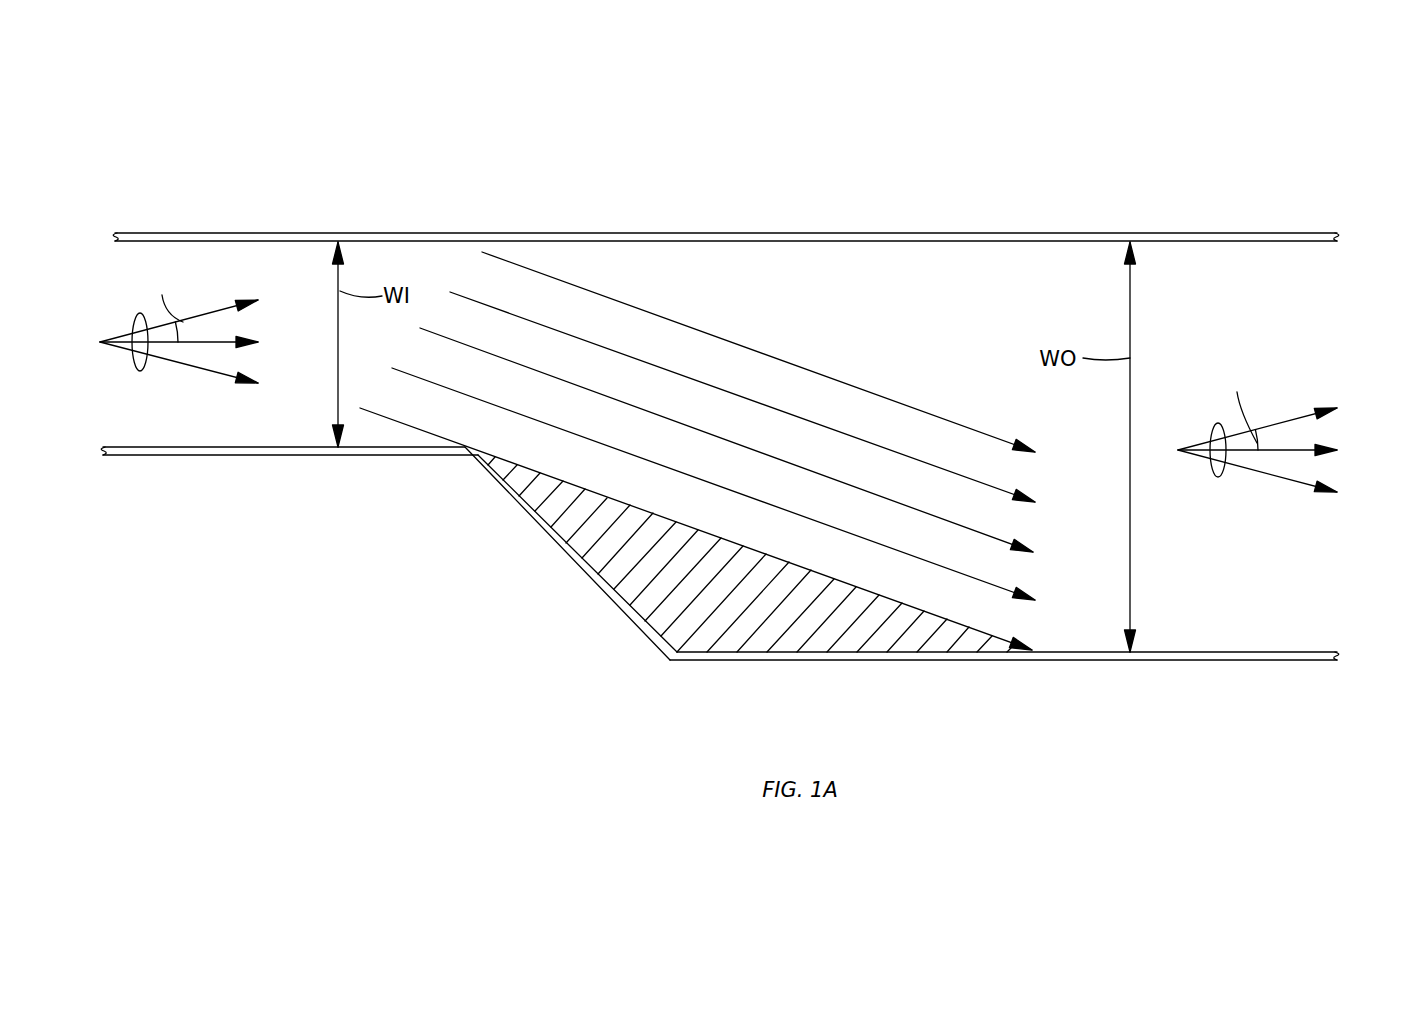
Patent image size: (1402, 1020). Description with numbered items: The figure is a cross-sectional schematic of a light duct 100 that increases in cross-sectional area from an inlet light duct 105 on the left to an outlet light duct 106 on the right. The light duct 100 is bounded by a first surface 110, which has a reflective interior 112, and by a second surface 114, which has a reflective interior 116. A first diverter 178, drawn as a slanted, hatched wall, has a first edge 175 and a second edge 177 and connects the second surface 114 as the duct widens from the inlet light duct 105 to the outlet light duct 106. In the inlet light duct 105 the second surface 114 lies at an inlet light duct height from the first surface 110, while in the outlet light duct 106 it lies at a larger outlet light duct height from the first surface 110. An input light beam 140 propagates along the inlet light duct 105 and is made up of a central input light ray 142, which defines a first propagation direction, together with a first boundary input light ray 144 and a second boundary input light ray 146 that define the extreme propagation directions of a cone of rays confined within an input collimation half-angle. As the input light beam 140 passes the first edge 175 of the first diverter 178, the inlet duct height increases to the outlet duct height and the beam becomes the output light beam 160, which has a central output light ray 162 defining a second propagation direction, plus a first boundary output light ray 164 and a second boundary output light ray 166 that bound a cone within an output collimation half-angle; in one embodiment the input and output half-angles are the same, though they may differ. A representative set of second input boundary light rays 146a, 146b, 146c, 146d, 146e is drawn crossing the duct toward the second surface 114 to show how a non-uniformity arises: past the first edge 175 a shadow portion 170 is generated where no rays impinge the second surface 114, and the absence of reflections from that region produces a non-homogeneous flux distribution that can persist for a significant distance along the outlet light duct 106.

The light duct 100 is at (720, 387).
The inlet light duct 105 is at (173, 222).
The outlet light duct 106 is at (1202, 220).
The first surface 110 is at (265, 233).
The reflective interior 112 is at (722, 243).
The second surface 114 is at (163, 455).
The reflective interior 116 is at (226, 447).
The input light beam 140 is at (179, 338).
The central input light ray 142 is at (223, 340).
The first boundary input light ray 144 is at (210, 313).
The second boundary input light ray 146 is at (183, 365).
The second input boundary light ray 146a is at (1003, 443).
The second input boundary light ray 146b is at (1003, 493).
The second input boundary light ray 146c is at (1003, 543).
The second input boundary light ray 146d is at (1003, 590).
The second input boundary light ray 146e is at (1003, 640).
The output light beam 160 is at (1270, 447).
The central output light ray 162 is at (1303, 447).
The first boundary output light ray 164 is at (1287, 418).
The second boundary output light ray 166 is at (1263, 468).
The shadow portion 170 is at (835, 625).
The first edge 175 is at (538, 553).
The second edge 177 is at (670, 663).
The first diverter 178 is at (558, 552).